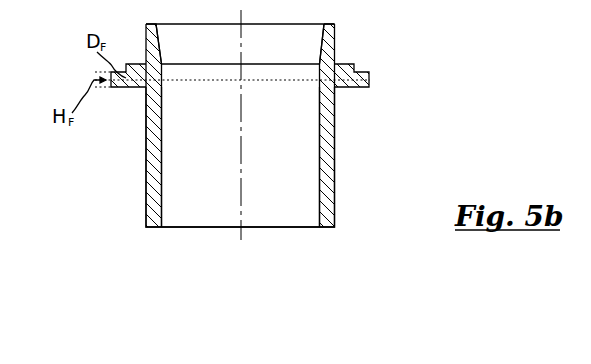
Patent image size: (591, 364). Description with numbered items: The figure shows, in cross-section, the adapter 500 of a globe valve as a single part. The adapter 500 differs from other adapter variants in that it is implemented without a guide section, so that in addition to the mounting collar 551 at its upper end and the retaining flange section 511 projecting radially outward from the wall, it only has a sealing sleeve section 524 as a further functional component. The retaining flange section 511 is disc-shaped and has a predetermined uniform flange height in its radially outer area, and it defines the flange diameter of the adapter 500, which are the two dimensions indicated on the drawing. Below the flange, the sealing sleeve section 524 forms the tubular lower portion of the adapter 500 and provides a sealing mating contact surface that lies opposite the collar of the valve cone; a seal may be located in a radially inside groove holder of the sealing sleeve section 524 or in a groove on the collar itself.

The adapter 500 is at (295, 182).
The mounting collar 551 is at (329, 43).
The retaining flange section 511 is at (371, 74).
The sealing sleeve section 524 is at (333, 180).